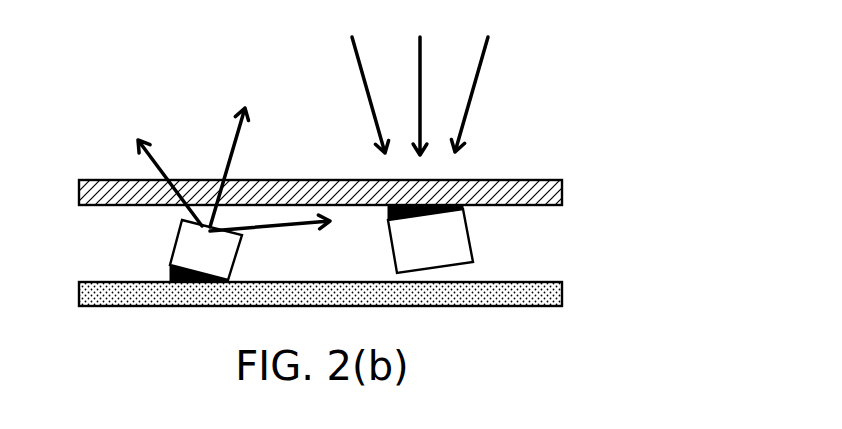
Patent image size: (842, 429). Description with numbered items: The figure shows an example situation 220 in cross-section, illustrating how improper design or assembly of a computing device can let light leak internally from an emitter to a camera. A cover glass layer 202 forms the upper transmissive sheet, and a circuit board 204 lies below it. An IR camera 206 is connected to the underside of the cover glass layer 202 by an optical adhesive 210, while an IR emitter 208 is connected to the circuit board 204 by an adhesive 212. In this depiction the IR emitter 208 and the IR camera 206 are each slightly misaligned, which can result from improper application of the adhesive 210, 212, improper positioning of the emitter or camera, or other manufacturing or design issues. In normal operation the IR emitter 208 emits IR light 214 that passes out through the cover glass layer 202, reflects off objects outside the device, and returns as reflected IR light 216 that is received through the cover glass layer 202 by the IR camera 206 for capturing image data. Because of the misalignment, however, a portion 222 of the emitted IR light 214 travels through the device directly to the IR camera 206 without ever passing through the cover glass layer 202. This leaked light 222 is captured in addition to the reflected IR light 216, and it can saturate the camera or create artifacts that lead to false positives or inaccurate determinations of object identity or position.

The cover glass layer 202 is at (562, 192).
The circuit board 204 is at (562, 292).
The IR camera 206 is at (409, 250).
The IR emitter 208 is at (186, 260).
The optical adhesive 210 is at (430, 204).
The adhesive 212 is at (172, 273).
The IR light 214 is at (227, 86).
The reflected IR light 216 is at (393, 26).
The example situation 220 is at (628, 88).
The portion of the light 222 is at (287, 241).